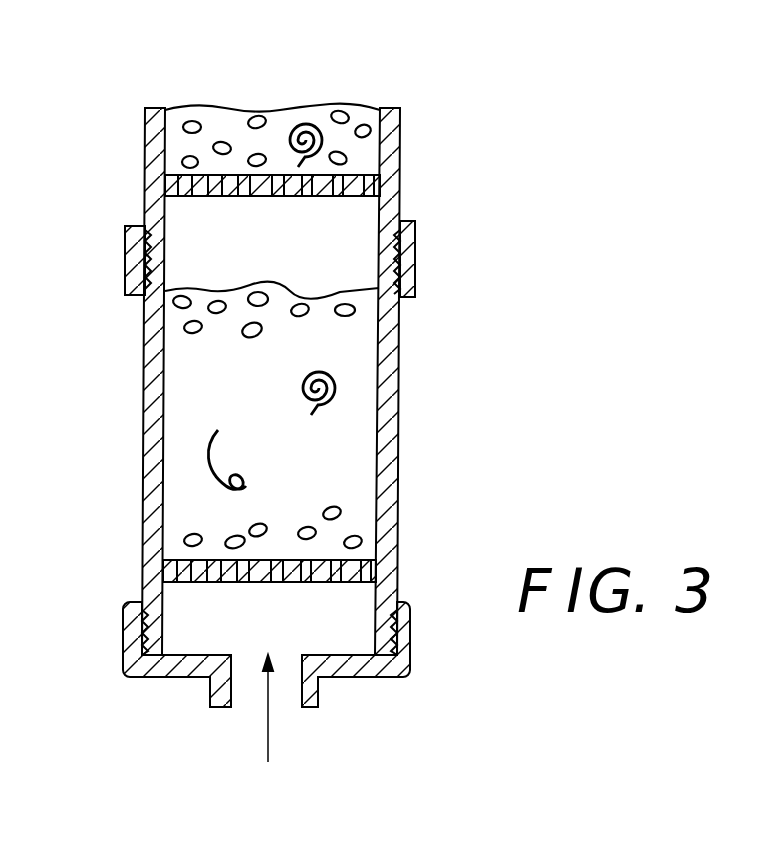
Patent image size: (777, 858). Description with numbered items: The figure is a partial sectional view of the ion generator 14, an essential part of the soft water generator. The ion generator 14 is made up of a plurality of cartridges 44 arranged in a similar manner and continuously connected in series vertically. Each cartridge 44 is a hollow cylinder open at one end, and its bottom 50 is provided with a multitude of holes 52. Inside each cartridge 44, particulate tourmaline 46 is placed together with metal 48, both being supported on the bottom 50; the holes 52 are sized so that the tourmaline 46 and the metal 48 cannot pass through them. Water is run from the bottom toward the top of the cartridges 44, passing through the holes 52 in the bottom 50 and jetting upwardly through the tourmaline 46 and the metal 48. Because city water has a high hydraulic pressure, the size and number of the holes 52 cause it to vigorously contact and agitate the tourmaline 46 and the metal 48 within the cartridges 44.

The ion generator 14 is at (436, 210).
The cartridge 44 is at (390, 138).
The particulate tourmaline 46 is at (192, 123).
The metal plates 48 is at (312, 125).
The bottom 50 is at (192, 200).
The holes 52 is at (237, 200).